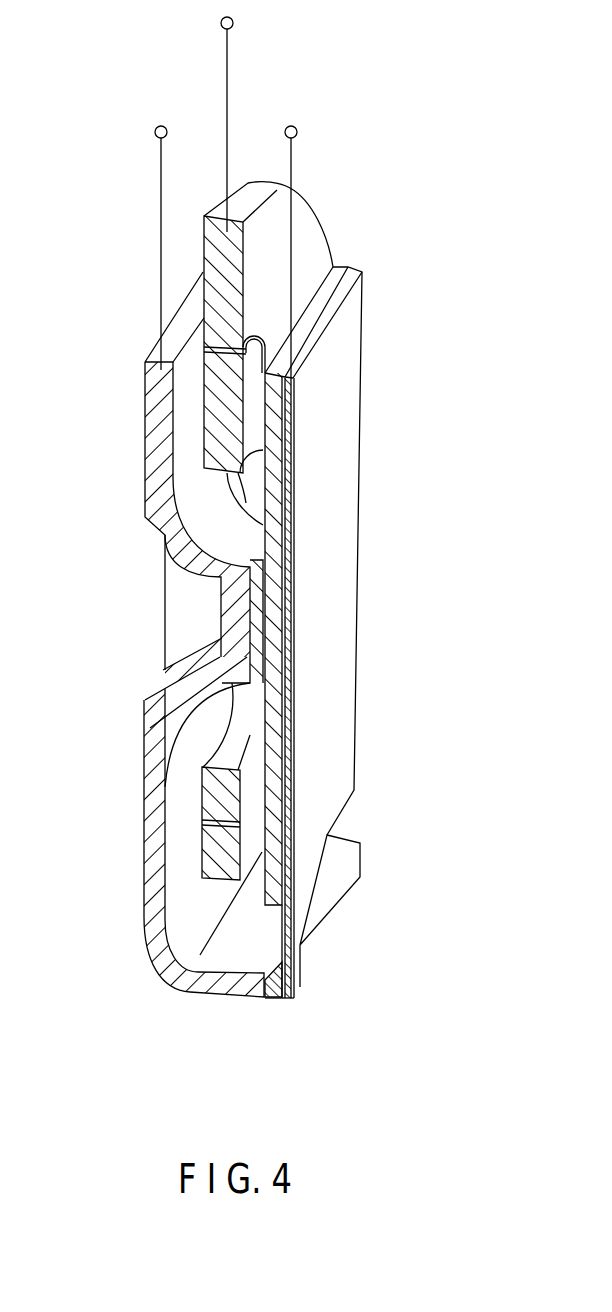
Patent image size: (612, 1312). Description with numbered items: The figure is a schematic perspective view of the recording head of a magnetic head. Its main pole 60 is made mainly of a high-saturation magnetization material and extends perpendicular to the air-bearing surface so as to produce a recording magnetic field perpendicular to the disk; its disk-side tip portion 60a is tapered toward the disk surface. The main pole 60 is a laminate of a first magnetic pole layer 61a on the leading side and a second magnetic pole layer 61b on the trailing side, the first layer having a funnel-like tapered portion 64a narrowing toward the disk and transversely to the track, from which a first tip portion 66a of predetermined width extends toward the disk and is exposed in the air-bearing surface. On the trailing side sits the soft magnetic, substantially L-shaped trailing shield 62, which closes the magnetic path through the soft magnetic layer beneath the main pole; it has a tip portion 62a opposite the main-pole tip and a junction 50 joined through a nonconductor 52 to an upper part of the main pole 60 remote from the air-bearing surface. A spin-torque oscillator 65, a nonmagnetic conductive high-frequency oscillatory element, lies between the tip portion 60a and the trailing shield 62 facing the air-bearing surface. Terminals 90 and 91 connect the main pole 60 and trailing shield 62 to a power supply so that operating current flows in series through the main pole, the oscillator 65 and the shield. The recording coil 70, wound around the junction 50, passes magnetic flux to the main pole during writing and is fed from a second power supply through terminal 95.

The junction 50 is at (227, 623).
The nonconductor 52 is at (257, 590).
The main pole 60 is at (280, 920).
The tip portion of the main pole 60a is at (293, 990).
The first magnetic pole layer 61a is at (343, 748).
The second magnetic pole layer 61b is at (272, 690).
The trailing shield 62 is at (159, 665).
The tip portion of the trailing shield 62a is at (190, 980).
The tapered portion 64a is at (305, 866).
The spin-torque oscillator 65 is at (275, 1000).
The first tip portion 66a is at (295, 968).
The recording coil 70 is at (204, 237).
The terminal 90 is at (291, 126).
The terminal 91 is at (155, 132).
The terminal 95 is at (221, 23).